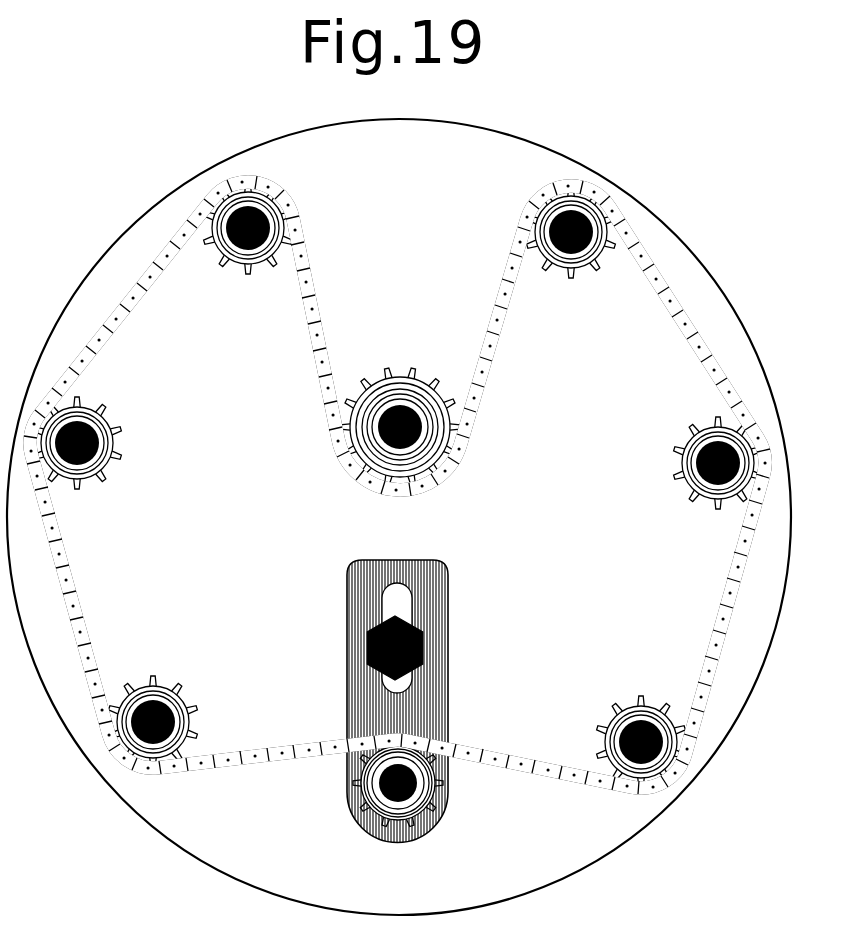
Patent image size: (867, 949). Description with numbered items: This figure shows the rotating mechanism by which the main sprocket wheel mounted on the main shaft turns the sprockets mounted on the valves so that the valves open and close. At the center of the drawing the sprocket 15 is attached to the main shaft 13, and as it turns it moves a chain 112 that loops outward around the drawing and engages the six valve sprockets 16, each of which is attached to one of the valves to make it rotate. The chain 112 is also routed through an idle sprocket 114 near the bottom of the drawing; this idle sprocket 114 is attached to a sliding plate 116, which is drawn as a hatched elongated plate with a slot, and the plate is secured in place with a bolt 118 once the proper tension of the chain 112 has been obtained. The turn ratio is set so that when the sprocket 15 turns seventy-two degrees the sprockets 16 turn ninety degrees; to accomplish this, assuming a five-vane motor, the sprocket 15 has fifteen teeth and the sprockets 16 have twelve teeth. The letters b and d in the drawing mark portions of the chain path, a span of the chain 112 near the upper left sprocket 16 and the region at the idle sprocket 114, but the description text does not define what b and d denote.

The main shaft 13 is at (425, 452).
The sprocket 15 is at (406, 340).
The sprockets 16 is at (223, 296).
The chain 112 is at (487, 372).
The idle sprocket 114 is at (415, 845).
The sliding plate 116 is at (467, 682).
The bolt 118 is at (433, 630).
The chain span b is at (334, 281).
The chain span d is at (469, 809).